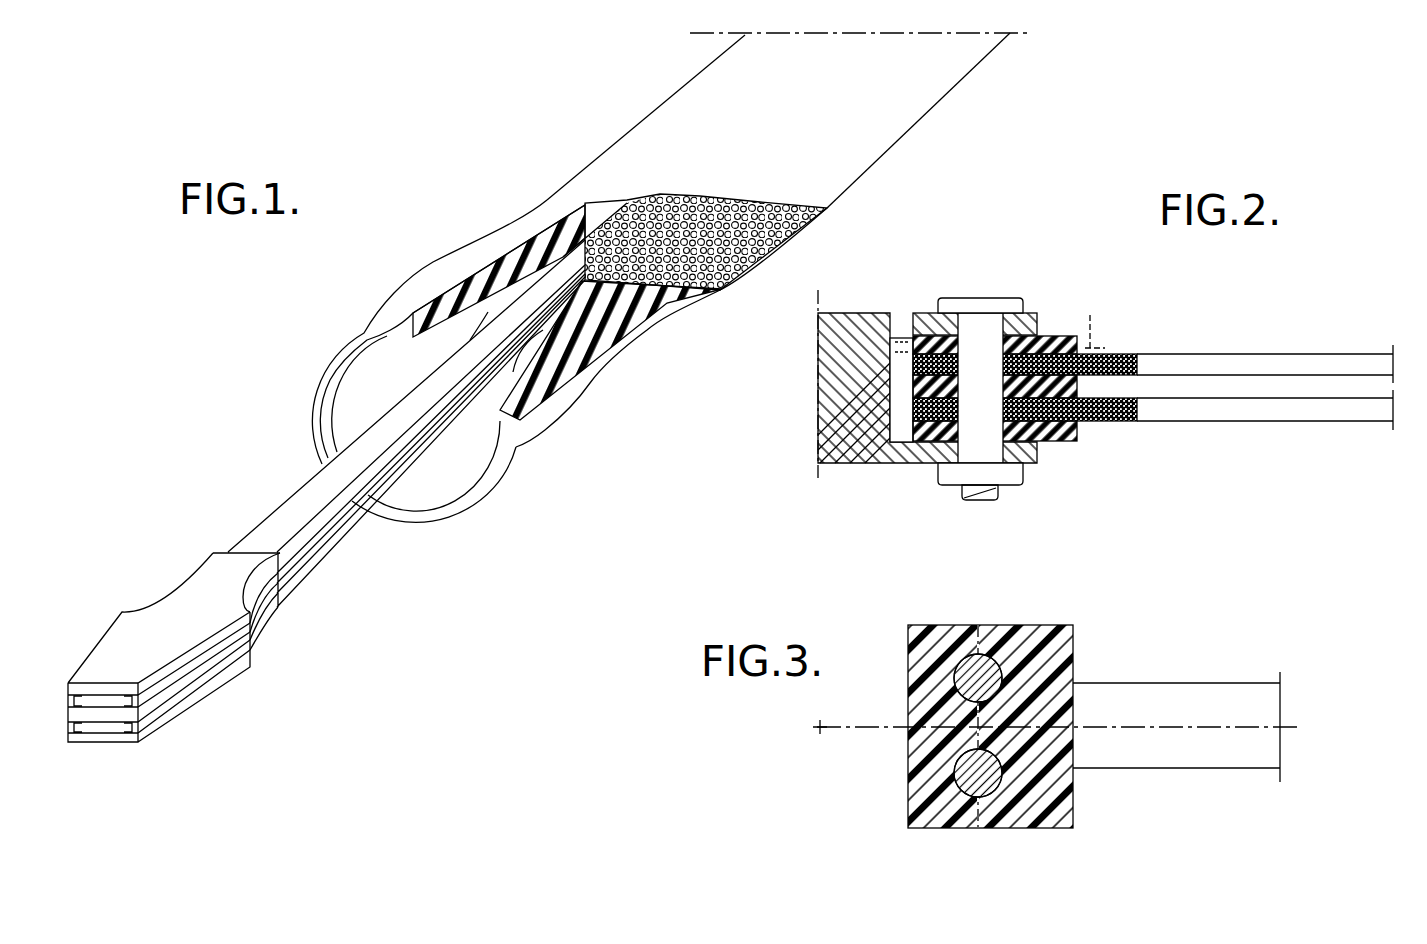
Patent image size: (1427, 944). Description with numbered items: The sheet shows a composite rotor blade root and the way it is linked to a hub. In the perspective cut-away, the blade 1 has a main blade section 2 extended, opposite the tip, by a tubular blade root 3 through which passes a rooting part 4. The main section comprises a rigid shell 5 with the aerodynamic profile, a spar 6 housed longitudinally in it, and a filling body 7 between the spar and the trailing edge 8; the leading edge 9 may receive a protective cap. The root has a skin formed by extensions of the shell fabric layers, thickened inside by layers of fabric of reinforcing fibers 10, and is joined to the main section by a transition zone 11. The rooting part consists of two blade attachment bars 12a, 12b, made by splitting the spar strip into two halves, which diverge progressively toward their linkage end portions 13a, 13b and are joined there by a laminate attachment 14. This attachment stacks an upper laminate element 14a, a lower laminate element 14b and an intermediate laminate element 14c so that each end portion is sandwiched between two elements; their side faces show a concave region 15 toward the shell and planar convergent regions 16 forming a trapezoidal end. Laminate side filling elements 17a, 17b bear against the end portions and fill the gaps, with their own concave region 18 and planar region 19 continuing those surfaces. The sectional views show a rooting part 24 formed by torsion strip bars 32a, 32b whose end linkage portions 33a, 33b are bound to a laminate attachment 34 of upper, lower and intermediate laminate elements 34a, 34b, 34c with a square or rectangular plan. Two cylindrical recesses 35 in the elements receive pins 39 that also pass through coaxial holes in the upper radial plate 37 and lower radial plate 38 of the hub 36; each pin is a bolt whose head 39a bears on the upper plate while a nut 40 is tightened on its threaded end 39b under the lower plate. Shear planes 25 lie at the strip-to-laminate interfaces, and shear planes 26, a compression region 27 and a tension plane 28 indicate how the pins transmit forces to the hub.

In FIG. 1, the blade 1 is at (510, 203).
In FIG. 1, the main blade section 2 is at (655, 108).
In FIG. 1, the tubular blade root 3 is at (400, 287).
In FIG. 1, the rooting part 4 is at (280, 502).
In FIG. 1, the rigid shell 5 is at (950, 50).
In FIG. 1, the spar 6 is at (567, 258).
In FIG. 1, the filling body 7 is at (715, 270).
In FIG. 1, the trailing edge 8 is at (890, 148).
In FIG. 1, the leading edge 9 is at (625, 133).
In FIG. 1, the layers of fabric of reinforcing fibers 10 is at (490, 277).
In FIG. 1, the transition zone 11 is at (645, 332).
In FIG. 1, the upper blade attachment bar 12a is at (313, 492).
In FIG. 1, the lower blade attachment bar 12b is at (323, 535).
In FIG. 1, the linkage end portion of upper strip 13a is at (95, 735).
In FIG. 1, the linkage end portion of lower strip 13b is at (117, 732).
In FIG. 1, the laminate attachment 14 is at (238, 677).
In FIG. 1, the upper laminate element 14a is at (163, 620).
In FIG. 1, the lower laminate element 14b is at (240, 667).
In FIG. 1, the intermediate laminate element 14c is at (215, 667).
In FIG. 1, the concave region 15 is at (192, 572).
In FIG. 1, the planar convergent regions 16 is at (100, 637).
In FIG. 1, the upper laminate side filling elements 17a is at (72, 688).
In FIG. 1, the lower laminate side filling elements 17b is at (72, 730).
In FIG. 1, the concave region of side filling element 18 is at (280, 580).
In FIG. 1, the planar region of side filling element 19 is at (187, 677).
In FIG. 2, the rooting part 24 is at (1283, 353).
In FIG. 2, the shear planes 25 is at (915, 440).
In FIG. 3, the shear planes 26 is at (1060, 657).
In FIG. 3, the compression region 27 is at (1075, 664).
In FIG. 3, the tension plane 28 is at (980, 630).
In FIG. 2, the upper torsion strip bar 32a is at (1213, 367).
In FIG. 3, the upper torsion strip bar 32a is at (1193, 703).
In FIG. 2, the lower torsion strip bar 32b is at (1250, 402).
In FIG. 2, the end linkage portion of upper strip 33a is at (1013, 340).
In FIG. 2, the end linkage portion of lower strip 33b is at (1040, 440).
In FIG. 2, the laminate attachment 34 is at (1082, 437).
In FIG. 2, the upper laminate element 34a is at (1045, 358).
In FIG. 3, the upper laminate element 34a is at (1053, 650).
In FIG. 2, the lower laminate element 34b is at (1057, 437).
In FIG. 2, the intermediate laminate element 34c is at (1127, 357).
In FIG. 3, the cylindrical recesses 35 is at (977, 668).
In FIG. 2, the hub 36 is at (853, 347).
In FIG. 2, the upper radial plate 37 is at (927, 320).
In FIG. 2, the lower radial plate 38 is at (928, 450).
In FIG. 2, the pins 39 is at (987, 327).
In FIG. 3, the pins 39 is at (983, 622).
In FIG. 2, the bolt head 39a is at (977, 303).
In FIG. 2, the threaded end 39b is at (987, 497).
In FIG. 2, the nut 40 is at (963, 482).